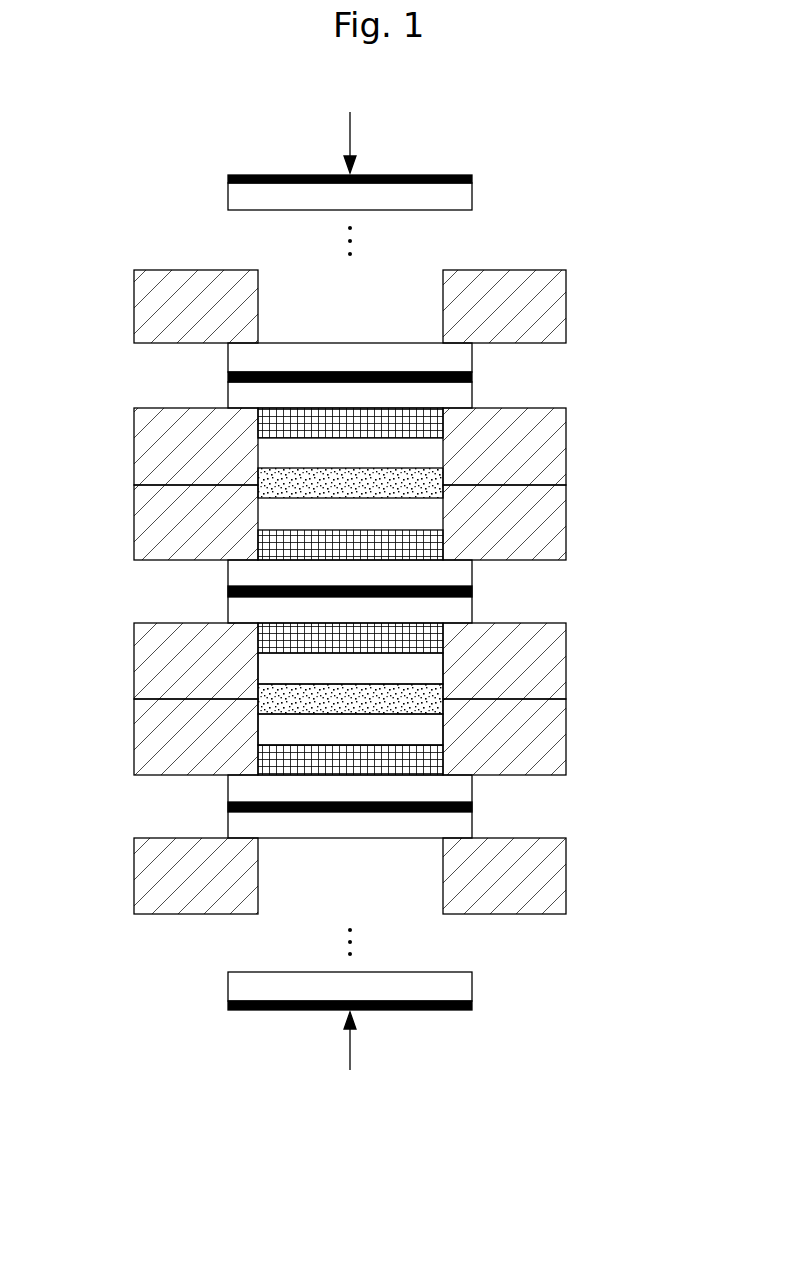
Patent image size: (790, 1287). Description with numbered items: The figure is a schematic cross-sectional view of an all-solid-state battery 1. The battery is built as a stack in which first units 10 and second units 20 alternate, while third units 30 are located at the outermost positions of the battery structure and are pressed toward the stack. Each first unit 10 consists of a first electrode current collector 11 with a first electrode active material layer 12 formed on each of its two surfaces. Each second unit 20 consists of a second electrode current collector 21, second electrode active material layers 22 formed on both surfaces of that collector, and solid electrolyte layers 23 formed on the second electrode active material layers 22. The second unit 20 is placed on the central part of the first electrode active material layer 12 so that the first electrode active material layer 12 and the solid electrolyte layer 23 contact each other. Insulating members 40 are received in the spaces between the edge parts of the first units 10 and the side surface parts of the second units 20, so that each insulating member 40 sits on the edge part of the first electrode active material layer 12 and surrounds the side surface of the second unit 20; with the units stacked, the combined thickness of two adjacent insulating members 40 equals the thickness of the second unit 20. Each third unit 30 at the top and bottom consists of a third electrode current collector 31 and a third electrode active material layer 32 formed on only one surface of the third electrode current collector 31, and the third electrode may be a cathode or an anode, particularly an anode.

The all-solid-state battery 1 is at (97, 103).
The first unit 10 is at (442, 374).
The first electrode current collector 11 is at (474, 378).
The first electrode active material layer 12 is at (462, 360).
The second unit 20 is at (462, 699).
The second electrode current collector 21 is at (432, 698).
The second electrode active material layer 22 is at (432, 670).
The solid electrolyte layer 23 is at (432, 633).
The third unit 30 is at (419, 184).
The third electrode current collector 31 is at (474, 176).
The third electrode active material layer 32 is at (397, 202).
The insulating member 40 is at (552, 456).